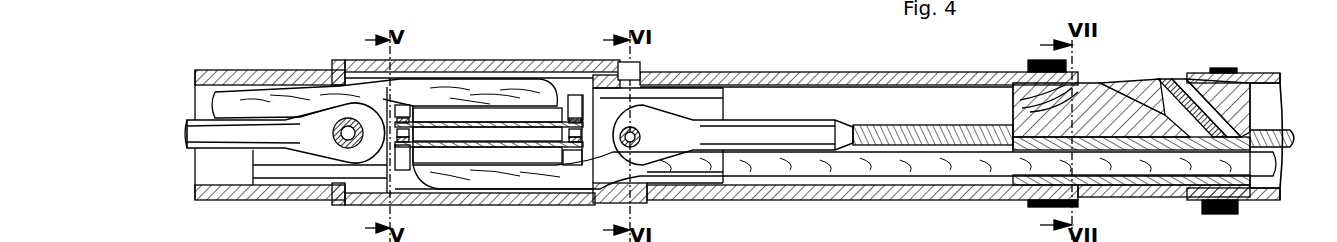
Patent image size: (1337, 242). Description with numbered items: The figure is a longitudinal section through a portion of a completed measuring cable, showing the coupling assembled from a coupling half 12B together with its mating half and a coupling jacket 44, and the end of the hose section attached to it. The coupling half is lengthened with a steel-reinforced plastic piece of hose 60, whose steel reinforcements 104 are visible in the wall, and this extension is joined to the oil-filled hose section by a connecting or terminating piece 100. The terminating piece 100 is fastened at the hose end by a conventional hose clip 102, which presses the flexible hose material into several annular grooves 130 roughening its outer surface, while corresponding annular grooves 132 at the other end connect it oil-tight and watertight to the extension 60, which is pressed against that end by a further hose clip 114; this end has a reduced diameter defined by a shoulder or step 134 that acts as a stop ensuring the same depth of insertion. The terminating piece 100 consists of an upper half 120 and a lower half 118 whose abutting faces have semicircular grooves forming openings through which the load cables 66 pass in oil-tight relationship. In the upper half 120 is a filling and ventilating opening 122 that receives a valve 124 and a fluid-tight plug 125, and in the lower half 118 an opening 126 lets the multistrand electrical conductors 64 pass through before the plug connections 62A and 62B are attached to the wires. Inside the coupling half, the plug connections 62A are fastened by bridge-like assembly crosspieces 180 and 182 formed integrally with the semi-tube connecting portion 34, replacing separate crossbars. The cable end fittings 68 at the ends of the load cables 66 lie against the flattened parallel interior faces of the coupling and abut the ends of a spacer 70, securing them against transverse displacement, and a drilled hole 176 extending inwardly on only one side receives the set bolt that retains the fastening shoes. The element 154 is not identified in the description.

The coupling half 12B is at (341, 61).
The coupling jacket 44 is at (430, 60).
The steel-reinforced plastic piece of hose 60 is at (808, 72).
The steel reinforcements 104 is at (740, 74).
The stop block 154 is at (641, 63).
The cable end fittings 68 is at (785, 114).
The spacer 70 is at (342, 140).
The drilled hole 176 is at (640, 143).
The electrical conductors 64 is at (182, 102).
The plug connection 62B is at (468, 120).
The plug connections 62A is at (477, 152).
The semi-tube connecting portion 34 is at (575, 95).
The assembly crosspiece 180 is at (560, 100).
The assembly crosspiece 182 is at (568, 160).
The load cables 66 is at (910, 131).
The annular grooves 132 is at (1013, 106).
The shoulder or step 134 is at (1073, 95).
The filling and ventilating opening 122 is at (1130, 90).
The plug 125 is at (1167, 80).
The valve 124 is at (1181, 82).
The upper half of connecting piece 120 is at (1240, 115).
The hose clip 102 is at (1224, 69).
The annular grooves 130 is at (1254, 98).
The connecting or terminating piece 100 is at (1156, 190).
The hose clip 114 is at (1032, 62).
The lower half of connecting piece 118 is at (1122, 190).
The opening 126 is at (1250, 200).